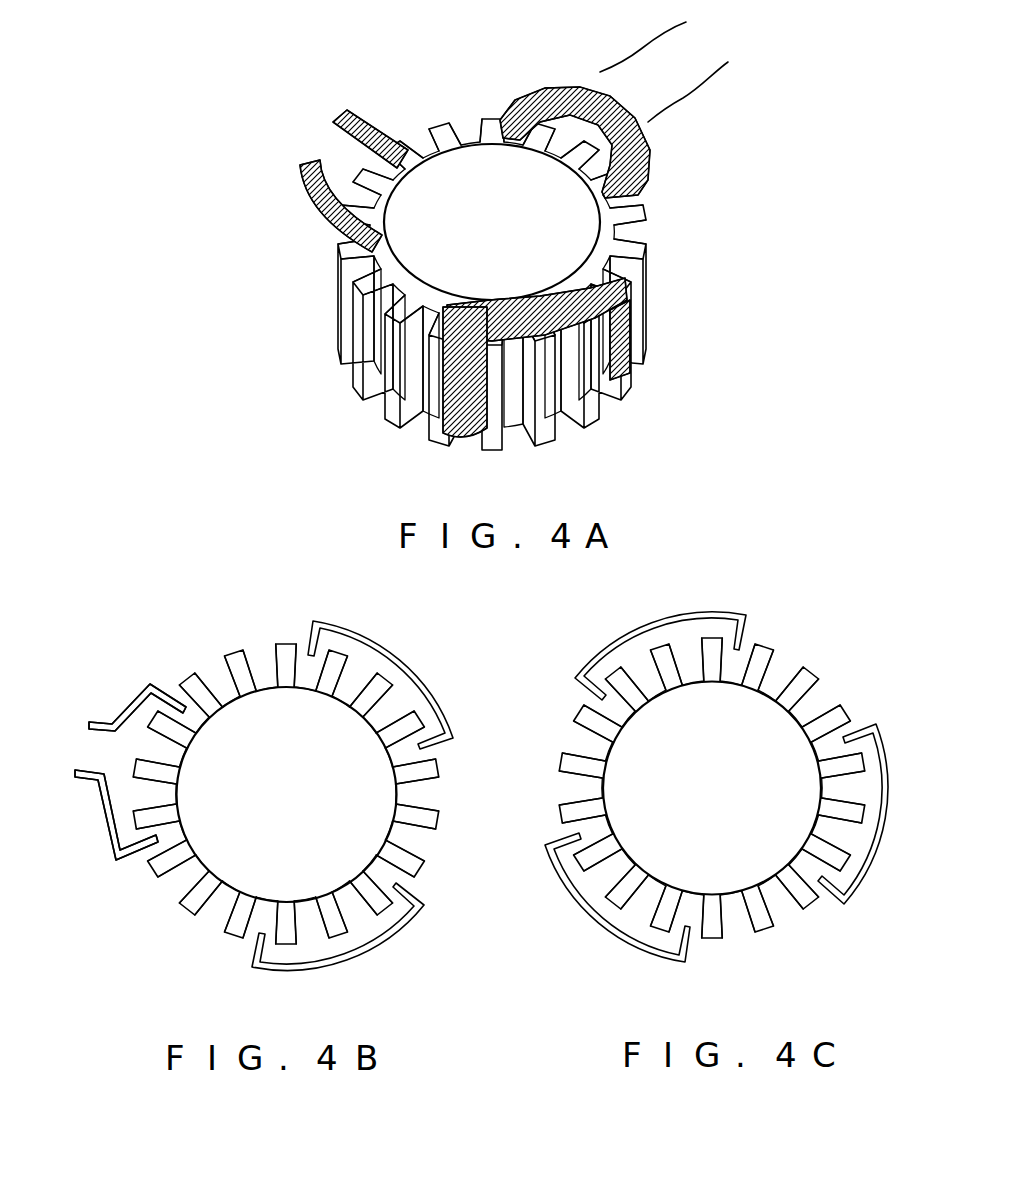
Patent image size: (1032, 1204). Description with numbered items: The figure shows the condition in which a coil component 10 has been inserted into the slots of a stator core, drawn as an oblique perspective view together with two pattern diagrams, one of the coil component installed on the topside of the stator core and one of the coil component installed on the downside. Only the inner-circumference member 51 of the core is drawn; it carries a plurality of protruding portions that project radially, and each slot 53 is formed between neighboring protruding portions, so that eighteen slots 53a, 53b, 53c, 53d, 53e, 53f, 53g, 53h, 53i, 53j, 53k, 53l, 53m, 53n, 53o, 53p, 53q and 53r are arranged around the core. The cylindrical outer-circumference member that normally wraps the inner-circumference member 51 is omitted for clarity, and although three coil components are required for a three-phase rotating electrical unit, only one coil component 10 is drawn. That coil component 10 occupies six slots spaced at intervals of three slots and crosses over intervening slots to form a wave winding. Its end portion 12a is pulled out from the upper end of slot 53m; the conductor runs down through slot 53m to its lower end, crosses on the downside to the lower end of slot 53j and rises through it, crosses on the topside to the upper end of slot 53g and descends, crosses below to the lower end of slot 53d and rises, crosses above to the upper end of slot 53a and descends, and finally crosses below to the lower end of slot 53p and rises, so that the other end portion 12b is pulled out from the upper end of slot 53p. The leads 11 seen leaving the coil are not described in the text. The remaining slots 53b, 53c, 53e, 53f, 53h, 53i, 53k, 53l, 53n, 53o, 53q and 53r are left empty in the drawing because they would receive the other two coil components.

In FIG. 4A, the coil component 10 is at (300, 232).
In FIG. 4B, the coil component 10 is at (392, 648).
In FIG. 4C, the coil component 10 is at (642, 628).
In FIG. 4A, the coil lead wires 11 is at (629, 45).
In FIG. 4A, the end portion of coil component 12a is at (300, 189).
In FIG. 4B, the end portion of coil component 12a is at (78, 789).
In FIG. 4A, the end portion of coil component 12b is at (334, 121).
In FIG. 4B, the end portion of coil component 12b is at (88, 711).
In FIG. 4A, the inner-circumference member 51 is at (337, 380).
In FIG. 4A, the slot 53 is at (584, 412).
In FIG. 4A, the slot 53a is at (524, 88).
In FIG. 4B, the slot 53a is at (304, 689).
In FIG. 4C, the slot 53a is at (731, 682).
In FIG. 4A, the slot 53b is at (564, 143).
In FIG. 4B, the slot 53b is at (341, 700).
In FIG. 4C, the slot 53b is at (786, 660).
In FIG. 4A, the slot 53c is at (600, 165).
In FIG. 4B, the slot 53c is at (370, 724).
In FIG. 4C, the slot 53c is at (826, 690).
In FIG. 4A, the slot 53d is at (654, 184).
In FIG. 4B, the slot 53d is at (389, 757).
In FIG. 4C, the slot 53d is at (814, 751).
In FIG. 4A, the slot 53e is at (630, 232).
In FIG. 4B, the slot 53e is at (439, 794).
In FIG. 4C, the slot 53e is at (822, 789).
In FIG. 4A, the slot 53f is at (623, 315).
In FIG. 4B, the slot 53f is at (430, 846).
In FIG. 4C, the slot 53f is at (815, 826).
In FIG. 4A, the slot 53g is at (626, 388).
In FIG. 4B, the slot 53g is at (371, 864).
In FIG. 4C, the slot 53g is at (796, 859).
In FIG. 4A, the slot 53h is at (564, 362).
In FIG. 4B, the slot 53h is at (342, 889).
In FIG. 4C, the slot 53h is at (787, 920).
In FIG. 4A, the slot 53i is at (518, 373).
In FIG. 4B, the slot 53i is at (305, 901).
In FIG. 4C, the slot 53i is at (736, 938).
In FIG. 4A, the slot 53j is at (468, 453).
In FIG. 4B, the slot 53j is at (267, 902).
In FIG. 4C, the slot 53j is at (693, 897).
In FIG. 4A, the slot 53k is at (419, 362).
In FIG. 4B, the slot 53k is at (211, 926).
In FIG. 4C, the slot 53k is at (657, 884).
In FIG. 4A, the slot 53l is at (384, 342).
In FIG. 4B, the slot 53l is at (171, 892).
In FIG. 4C, the slot 53l is at (628, 859).
In FIG. 4A, the slot 53m is at (329, 355).
In FIG. 4B, the slot 53m is at (184, 832).
In FIG. 4C, the slot 53m is at (609, 826).
In FIG. 4A, the slot 53n is at (354, 232).
In FIG. 4B, the slot 53n is at (177, 795).
In FIG. 4C, the slot 53n is at (561, 788).
In FIG. 4A, the slot 53o is at (361, 195).
In FIG. 4B, the slot 53o is at (184, 757).
In FIG. 4C, the slot 53o is at (569, 737).
In FIG. 4A, the slot 53p is at (375, 119).
In FIG. 4B, the slot 53p is at (203, 724).
In FIG. 4C, the slot 53p is at (628, 718).
In FIG. 4A, the slot 53q is at (419, 143).
In FIG. 4B, the slot 53q is at (208, 666).
In FIG. 4C, the slot 53q is at (658, 694).
In FIG. 4A, the slot 53r is at (465, 132).
In FIG. 4B, the slot 53r is at (261, 658).
In FIG. 4C, the slot 53r is at (690, 680).